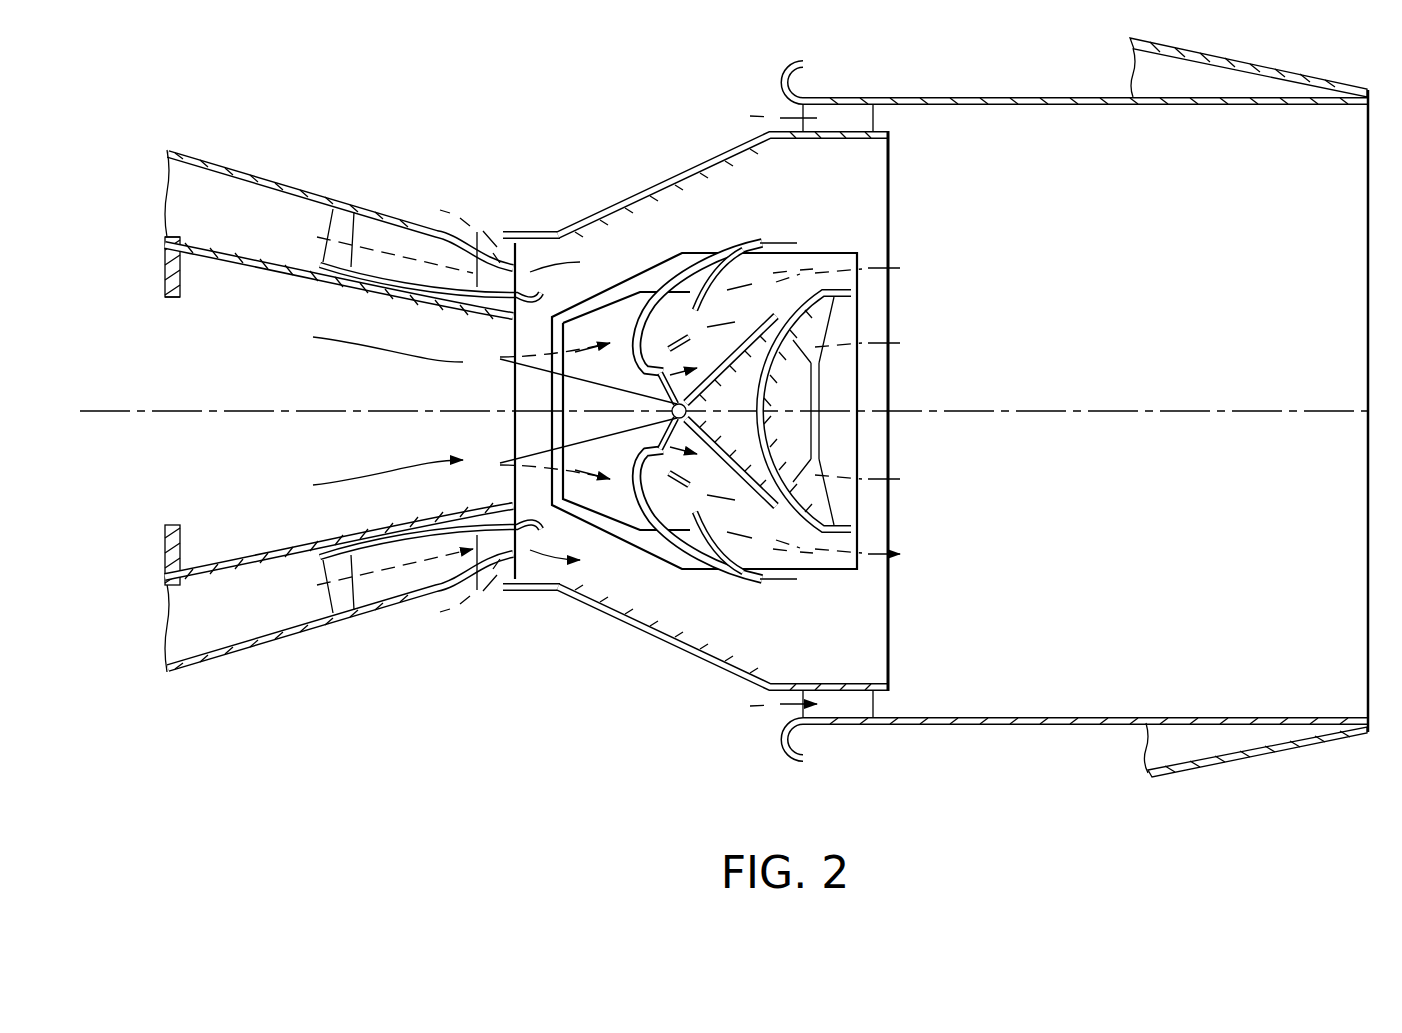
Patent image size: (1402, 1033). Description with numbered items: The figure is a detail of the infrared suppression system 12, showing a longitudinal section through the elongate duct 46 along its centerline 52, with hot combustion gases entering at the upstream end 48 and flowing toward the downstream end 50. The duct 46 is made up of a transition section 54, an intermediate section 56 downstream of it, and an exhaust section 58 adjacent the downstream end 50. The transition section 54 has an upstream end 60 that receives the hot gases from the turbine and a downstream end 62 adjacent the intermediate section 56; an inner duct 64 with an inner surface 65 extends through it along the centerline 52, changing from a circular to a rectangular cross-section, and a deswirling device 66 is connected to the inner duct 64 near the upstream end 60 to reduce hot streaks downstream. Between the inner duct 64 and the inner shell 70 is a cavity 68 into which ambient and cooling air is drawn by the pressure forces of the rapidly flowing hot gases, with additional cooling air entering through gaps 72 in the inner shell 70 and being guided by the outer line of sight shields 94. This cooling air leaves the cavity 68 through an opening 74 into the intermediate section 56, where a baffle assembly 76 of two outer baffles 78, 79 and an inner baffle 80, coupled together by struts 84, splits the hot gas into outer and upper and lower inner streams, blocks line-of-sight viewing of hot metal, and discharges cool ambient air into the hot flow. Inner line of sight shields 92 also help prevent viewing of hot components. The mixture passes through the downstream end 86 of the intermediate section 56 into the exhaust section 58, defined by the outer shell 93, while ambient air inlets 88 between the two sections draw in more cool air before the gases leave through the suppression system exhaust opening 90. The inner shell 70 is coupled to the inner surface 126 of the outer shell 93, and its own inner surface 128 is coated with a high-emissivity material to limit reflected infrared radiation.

The infrared suppression system 12 is at (594, 188).
The elongate duct 46 is at (410, 196).
The upstream end 48 is at (191, 128).
The downstream end 50 is at (1255, 77).
The centerline 52 is at (165, 412).
The transition section 54 is at (224, 480).
The intermediate section 56 is at (790, 230).
The exhaust section 58 is at (1114, 320).
The upstream end 60 is at (192, 590).
The downstream end 62 is at (462, 448).
The inner duct 64 is at (228, 262).
The inner surface 65 is at (283, 277).
The deswirling device 66 is at (165, 266).
The cavity 68 is at (290, 283).
The inner shell 70 is at (255, 170).
The gaps 72 is at (481, 208).
The opening 74 is at (530, 240).
The baffle assembly 76 is at (739, 209).
The outer baffle 78 is at (738, 238).
The outer baffle 79 is at (672, 545).
The inner baffle 80 is at (806, 522).
The struts 84 is at (660, 410).
The downstream end 86 is at (889, 169).
The ambient air inlets 88 is at (833, 120).
The suppression system exhaust opening 90 is at (1368, 660).
The inner line of sight shields 92 is at (388, 300).
The outer shell 93 is at (1236, 726).
The outer line of sight shields 94 is at (442, 238).
The inner surface 126 is at (1332, 106).
The inner surface 128 is at (214, 172).